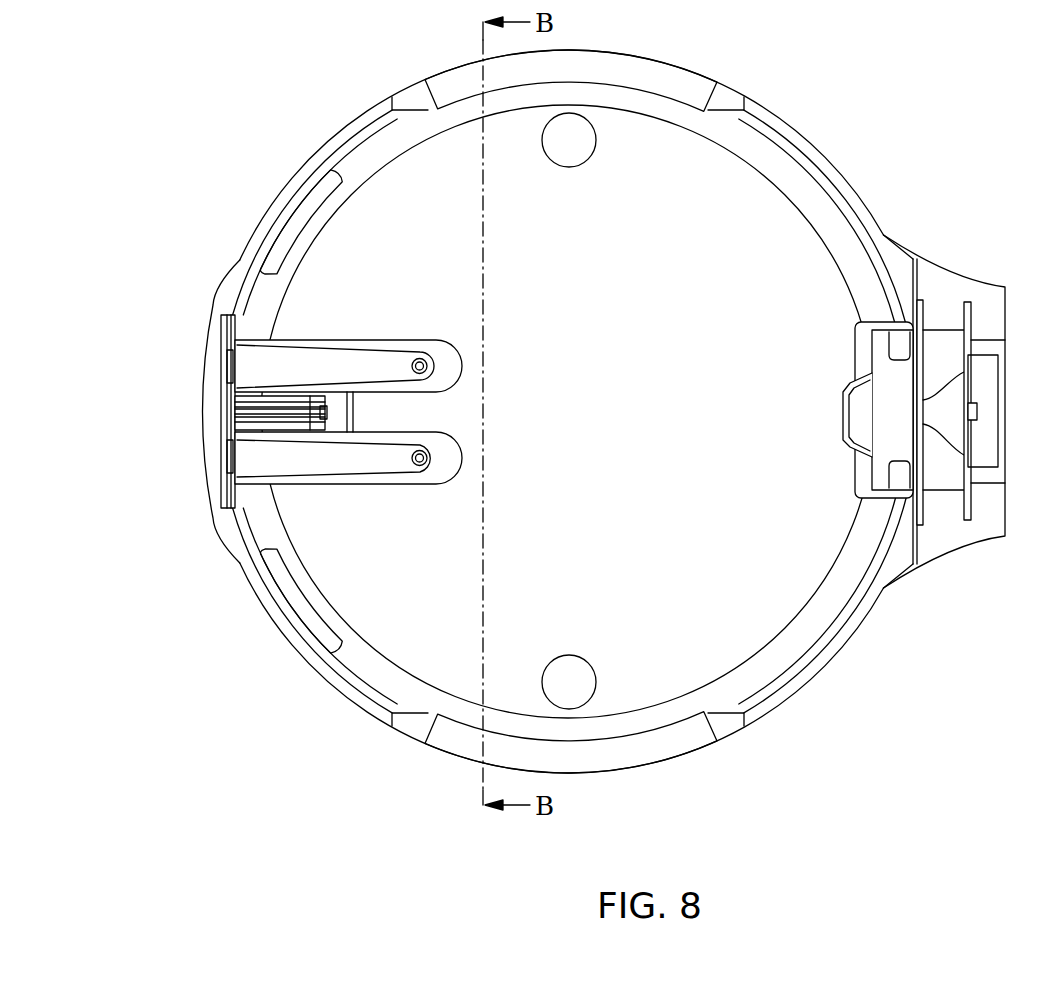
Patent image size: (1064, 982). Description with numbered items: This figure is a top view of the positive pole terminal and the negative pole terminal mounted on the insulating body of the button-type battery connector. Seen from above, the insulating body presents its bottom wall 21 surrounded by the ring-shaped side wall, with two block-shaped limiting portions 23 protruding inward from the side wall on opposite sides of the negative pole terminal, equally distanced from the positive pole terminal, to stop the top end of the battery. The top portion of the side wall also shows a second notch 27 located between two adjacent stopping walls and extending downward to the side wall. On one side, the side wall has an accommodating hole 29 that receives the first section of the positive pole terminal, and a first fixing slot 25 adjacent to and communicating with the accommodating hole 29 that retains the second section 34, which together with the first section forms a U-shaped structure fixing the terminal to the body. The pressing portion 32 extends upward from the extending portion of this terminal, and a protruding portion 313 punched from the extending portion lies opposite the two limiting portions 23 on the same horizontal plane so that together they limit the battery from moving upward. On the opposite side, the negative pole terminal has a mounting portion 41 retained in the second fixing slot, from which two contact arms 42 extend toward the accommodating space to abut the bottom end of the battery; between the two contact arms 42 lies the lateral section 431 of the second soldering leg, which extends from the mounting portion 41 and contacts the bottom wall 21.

The bottom wall 21 is at (688, 203).
The limiting portion 23 is at (312, 223).
The first fixing slot 25 is at (965, 512).
The second notch 27 is at (612, 77).
The accommodating hole 29 is at (947, 328).
The pressing portion 32 is at (895, 378).
The second section 34 is at (968, 375).
The mounting portion 41 is at (228, 415).
The contact arm 42 is at (282, 362).
The protruding portion 313 is at (862, 412).
The lateral section 431 is at (257, 410).